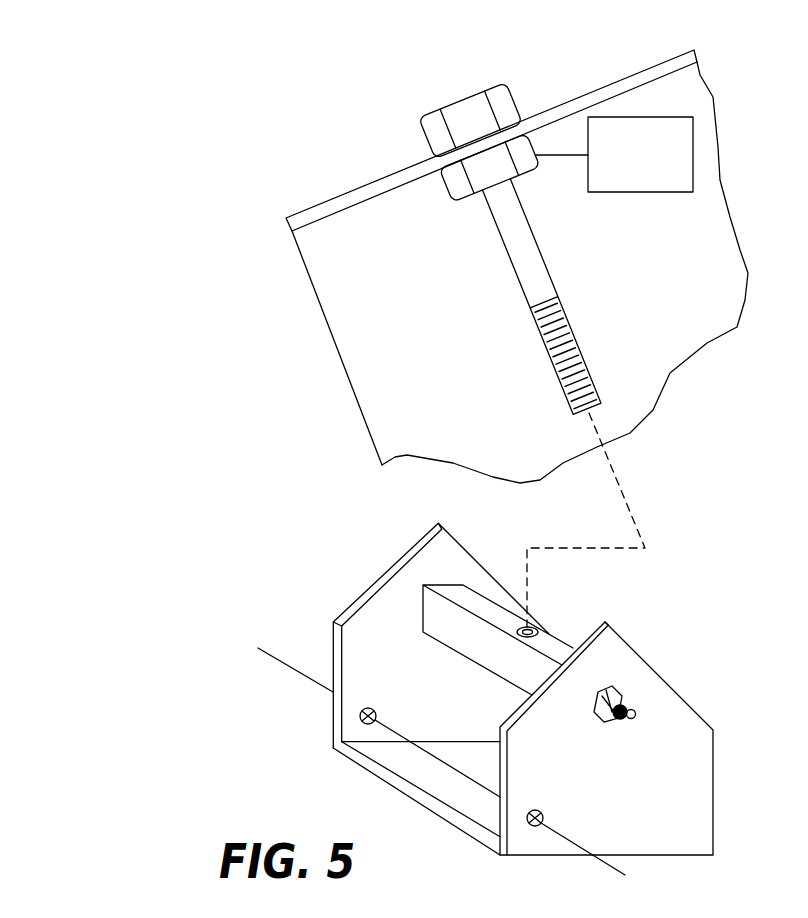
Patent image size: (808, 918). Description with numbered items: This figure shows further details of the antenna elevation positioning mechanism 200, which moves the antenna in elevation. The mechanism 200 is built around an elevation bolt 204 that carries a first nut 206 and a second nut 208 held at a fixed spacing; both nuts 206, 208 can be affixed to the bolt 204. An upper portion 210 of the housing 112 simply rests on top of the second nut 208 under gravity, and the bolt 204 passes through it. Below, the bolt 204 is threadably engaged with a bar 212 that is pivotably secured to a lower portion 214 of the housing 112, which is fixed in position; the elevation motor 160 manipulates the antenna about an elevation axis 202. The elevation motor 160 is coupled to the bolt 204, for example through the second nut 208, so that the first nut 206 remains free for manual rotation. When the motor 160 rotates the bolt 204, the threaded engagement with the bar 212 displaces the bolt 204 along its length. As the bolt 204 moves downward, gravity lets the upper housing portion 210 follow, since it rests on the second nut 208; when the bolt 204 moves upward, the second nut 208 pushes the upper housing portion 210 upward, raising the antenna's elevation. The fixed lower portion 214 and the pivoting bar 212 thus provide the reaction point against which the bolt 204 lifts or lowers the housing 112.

The antenna elevation positioning mechanism 200 is at (406, 82).
The first nut 206 is at (440, 136).
The second nut 208 is at (460, 186).
The upper portion of the housing 210 is at (318, 204).
The housing 112 is at (320, 255).
The elevation bolt 204 is at (533, 288).
The elevation motor 160 is at (672, 193).
The elevation axis 202 is at (283, 662).
The bar 212 is at (468, 598).
The lower portion of the housing 214 is at (678, 788).